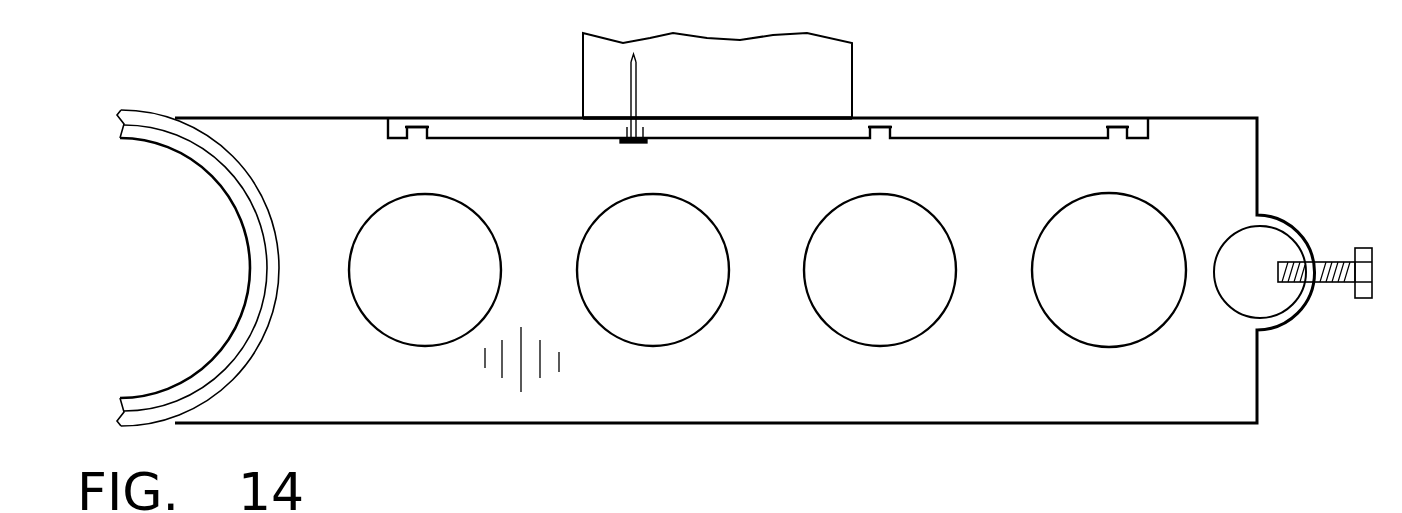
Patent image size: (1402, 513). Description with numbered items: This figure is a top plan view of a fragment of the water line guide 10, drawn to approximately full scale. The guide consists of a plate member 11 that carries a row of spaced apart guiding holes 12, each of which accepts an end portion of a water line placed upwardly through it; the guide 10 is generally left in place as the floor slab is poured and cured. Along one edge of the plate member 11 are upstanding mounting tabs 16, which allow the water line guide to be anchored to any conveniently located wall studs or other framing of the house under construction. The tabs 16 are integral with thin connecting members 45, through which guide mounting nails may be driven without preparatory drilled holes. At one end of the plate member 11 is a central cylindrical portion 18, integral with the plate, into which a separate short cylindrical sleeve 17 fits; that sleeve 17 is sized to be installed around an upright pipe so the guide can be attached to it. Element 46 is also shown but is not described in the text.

The water line guide 10 is at (773, 232).
The plate member 11 is at (1178, 175).
The guiding holes 12 is at (816, 230).
The upstanding mounting tabs 16 is at (533, 120).
The cylindrical sleeve 17 is at (245, 350).
The central cylindrical portion 18 is at (230, 152).
The thin connecting members 45 is at (413, 125).
The pin 46 is at (632, 145).